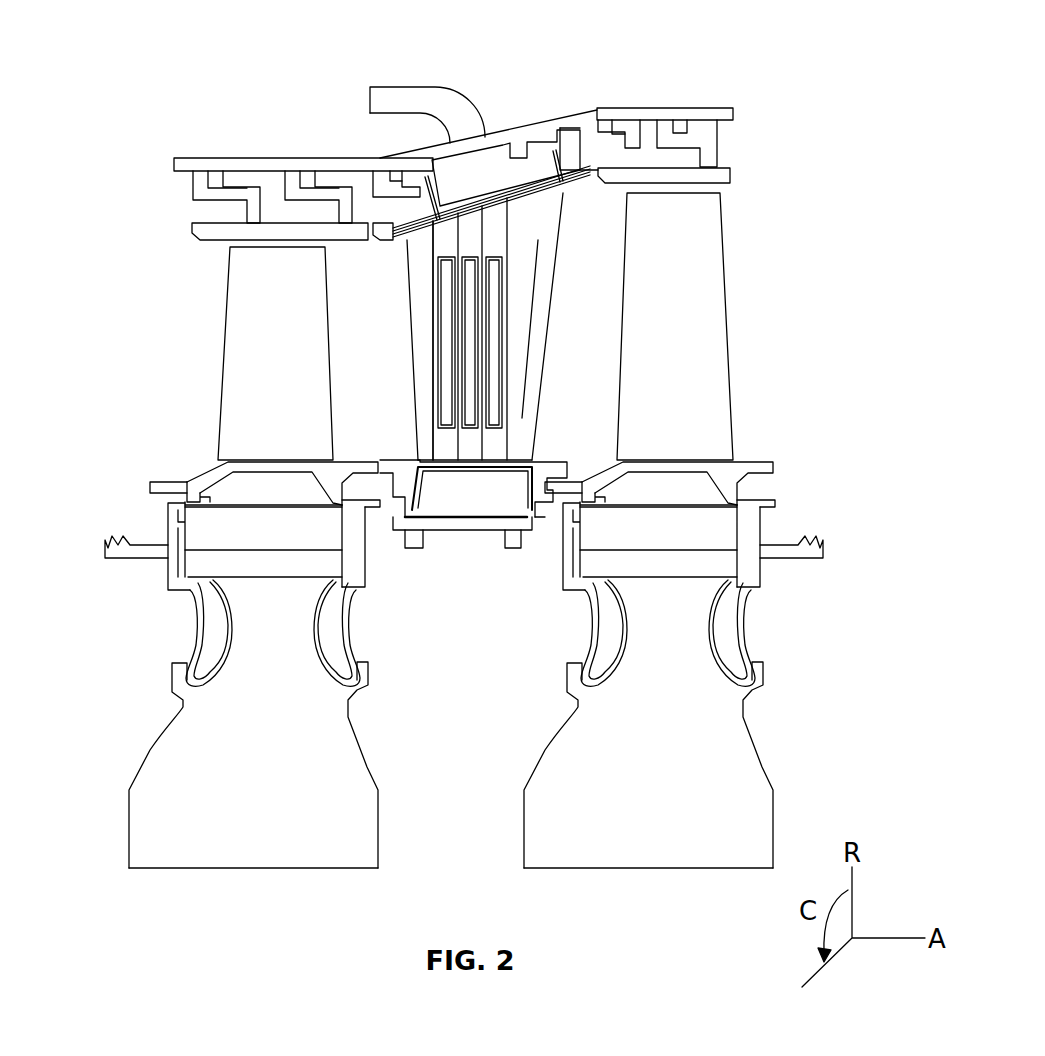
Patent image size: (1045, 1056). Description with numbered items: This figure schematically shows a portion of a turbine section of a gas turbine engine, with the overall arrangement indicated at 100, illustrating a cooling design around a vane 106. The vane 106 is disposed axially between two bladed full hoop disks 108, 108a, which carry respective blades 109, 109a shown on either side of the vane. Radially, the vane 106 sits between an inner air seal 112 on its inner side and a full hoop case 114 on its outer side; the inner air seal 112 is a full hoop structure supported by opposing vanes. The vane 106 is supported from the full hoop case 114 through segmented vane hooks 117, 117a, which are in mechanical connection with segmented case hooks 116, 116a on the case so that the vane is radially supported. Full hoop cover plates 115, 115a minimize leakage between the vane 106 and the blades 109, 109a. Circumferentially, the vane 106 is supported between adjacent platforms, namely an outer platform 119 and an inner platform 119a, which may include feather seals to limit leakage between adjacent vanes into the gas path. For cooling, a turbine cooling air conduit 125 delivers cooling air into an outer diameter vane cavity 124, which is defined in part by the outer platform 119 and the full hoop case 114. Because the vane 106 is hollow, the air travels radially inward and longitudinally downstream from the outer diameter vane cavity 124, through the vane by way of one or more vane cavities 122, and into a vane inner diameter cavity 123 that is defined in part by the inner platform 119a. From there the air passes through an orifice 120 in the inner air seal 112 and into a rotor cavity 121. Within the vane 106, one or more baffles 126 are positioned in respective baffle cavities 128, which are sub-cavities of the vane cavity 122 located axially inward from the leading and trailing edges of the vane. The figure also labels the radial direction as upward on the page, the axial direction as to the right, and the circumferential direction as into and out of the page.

The gas turbine engine section 100 is at (145, 62).
The vane 106 is at (545, 277).
The bladed full hoop disk 108 is at (775, 815).
The bladed full hoop disk 108a is at (129, 815).
The blade 109 is at (730, 322).
The blade 109a is at (222, 345).
The inner air seal 112 is at (528, 520).
The full hoop case 114 is at (735, 110).
The full hoop cover plate 115 is at (740, 620).
The full hoop cover plate 115a is at (350, 640).
The segmented case hook 116 is at (510, 145).
The segmented case hook 116a is at (383, 177).
The segmented vane hook 117 is at (555, 125).
The segmented vane hook 117a is at (415, 162).
The outer platform 119 is at (597, 150).
The inner platform 119a is at (420, 462).
The orifice 120 is at (450, 530).
The rotor cavity 121 is at (456, 752).
The vane cavity 122 is at (530, 353).
The vane inner diameter cavity 123 is at (458, 497).
The outer diameter vane cavity 124 is at (470, 172).
The turbine cooling air conduit 125 is at (400, 90).
The baffle 126 is at (440, 305).
The baffle cavity 128 is at (430, 378).